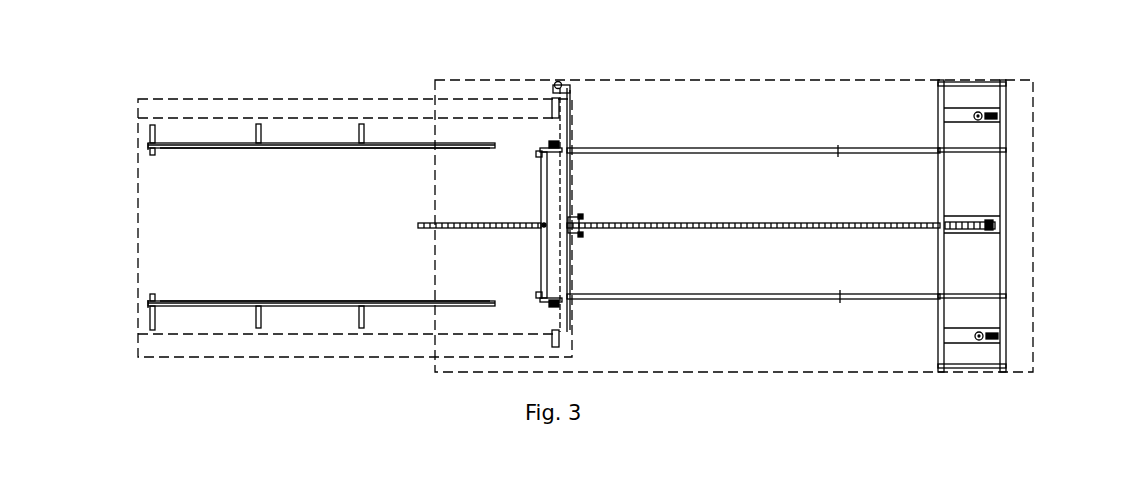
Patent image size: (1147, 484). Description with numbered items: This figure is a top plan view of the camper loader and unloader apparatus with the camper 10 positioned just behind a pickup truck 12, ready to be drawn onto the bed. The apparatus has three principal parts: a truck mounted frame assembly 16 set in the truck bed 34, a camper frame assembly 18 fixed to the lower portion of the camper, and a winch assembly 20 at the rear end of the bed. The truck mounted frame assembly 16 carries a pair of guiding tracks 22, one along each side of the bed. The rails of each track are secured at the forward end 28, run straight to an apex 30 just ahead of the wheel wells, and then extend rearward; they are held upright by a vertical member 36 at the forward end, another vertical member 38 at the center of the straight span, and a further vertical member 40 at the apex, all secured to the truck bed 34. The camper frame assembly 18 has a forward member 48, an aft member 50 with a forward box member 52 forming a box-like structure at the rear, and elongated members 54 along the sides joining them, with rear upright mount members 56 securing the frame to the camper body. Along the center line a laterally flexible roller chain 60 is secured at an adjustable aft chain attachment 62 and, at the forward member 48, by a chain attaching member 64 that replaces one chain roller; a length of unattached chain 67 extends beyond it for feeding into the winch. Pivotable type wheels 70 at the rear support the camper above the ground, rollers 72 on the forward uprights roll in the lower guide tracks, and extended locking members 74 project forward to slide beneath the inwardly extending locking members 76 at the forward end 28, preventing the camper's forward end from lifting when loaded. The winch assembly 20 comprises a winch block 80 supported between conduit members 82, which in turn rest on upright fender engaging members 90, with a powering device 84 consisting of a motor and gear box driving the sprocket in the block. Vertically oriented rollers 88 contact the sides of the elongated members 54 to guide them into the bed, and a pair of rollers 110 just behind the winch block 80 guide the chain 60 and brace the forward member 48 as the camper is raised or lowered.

The camper 10 is at (745, 375).
The pickup truck 12 is at (172, 92).
The truck mounted frame assembly 16 is at (277, 150).
The camper frame assembly 18 is at (976, 80).
The winch assembly 20 is at (580, 90).
The guiding tracks 22 is at (345, 298).
The forward end of the guide track 28 is at (148, 148).
The apex 30 is at (380, 149).
The truck bed 34 is at (190, 194).
The vertical member 36 is at (150, 130).
The vertical member 38 is at (256, 131).
The vertical member 40 is at (359, 131).
The forward member 48 is at (541, 210).
The aft member 50 is at (1006, 245).
The forward box member 52 is at (940, 198).
The elongated members 54 is at (650, 148).
The rear upright mount members 56 is at (839, 148).
The chain 60 is at (722, 223).
The aft chain attachment 62 is at (996, 224).
The chain attaching member 64 is at (542, 228).
The unattached chain 67 is at (420, 229).
The pivotable type wheels 70 is at (990, 117).
The rollers 72 is at (542, 148).
The extended locking members 74 is at (539, 156).
The inwardly extending locking members 76 is at (150, 153).
The winch block 80 is at (574, 216).
The conduit members 82 is at (567, 136).
The powering device 84 is at (554, 82).
The vertically oriented roller 88 is at (552, 143).
The fender engaging members 90 is at (553, 108).
The rollers 110 is at (582, 217).